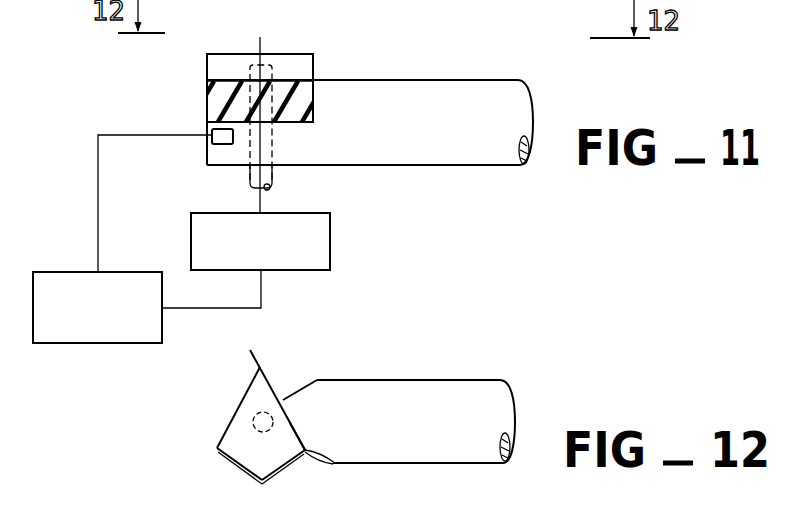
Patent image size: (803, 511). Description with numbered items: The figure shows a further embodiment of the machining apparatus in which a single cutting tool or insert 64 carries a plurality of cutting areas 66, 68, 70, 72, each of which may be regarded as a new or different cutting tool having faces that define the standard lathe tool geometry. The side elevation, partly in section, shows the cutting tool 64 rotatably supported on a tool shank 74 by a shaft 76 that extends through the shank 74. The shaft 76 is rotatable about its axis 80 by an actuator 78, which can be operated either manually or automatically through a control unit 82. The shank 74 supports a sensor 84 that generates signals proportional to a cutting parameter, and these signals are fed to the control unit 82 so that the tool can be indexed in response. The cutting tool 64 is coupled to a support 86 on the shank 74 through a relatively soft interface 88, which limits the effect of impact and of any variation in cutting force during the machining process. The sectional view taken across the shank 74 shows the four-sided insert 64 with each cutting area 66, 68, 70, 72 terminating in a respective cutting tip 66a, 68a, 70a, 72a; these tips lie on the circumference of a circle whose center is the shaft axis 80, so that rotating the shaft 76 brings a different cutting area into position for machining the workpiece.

In FIG. 11, the cutting tool 64 is at (299, 51).
In FIG. 12, the cutting tool 64 is at (203, 398).
In FIG. 12, the cutting area 66 is at (217, 456).
In FIG. 12, the cutting tip 66a is at (217, 447).
In FIG. 12, the cutting area 68 is at (240, 402).
In FIG. 12, the cutting tip 68a is at (255, 387).
In FIG. 12, the cutting area 70 is at (273, 473).
In FIG. 12, the cutting tip 70a is at (263, 477).
In FIG. 12, the cutting area 72 is at (304, 435).
In FIG. 12, the cutting tip 72a is at (334, 464).
In FIG. 11, the tool shank 74 is at (450, 167).
In FIG. 12, the tool shank 74 is at (430, 378).
In FIG. 11, the shaft 76 is at (247, 178).
In FIG. 11, the actuator 78 is at (331, 232).
In FIG. 11, the shaft axis 80 is at (260, 52).
In FIG. 12, the shaft axis 80 is at (264, 412).
In FIG. 11, the control unit 82 is at (60, 270).
In FIG. 11, the sensor 84 is at (212, 143).
In FIG. 11, the support 86 is at (208, 120).
In FIG. 11, the soft interface 88 is at (220, 90).